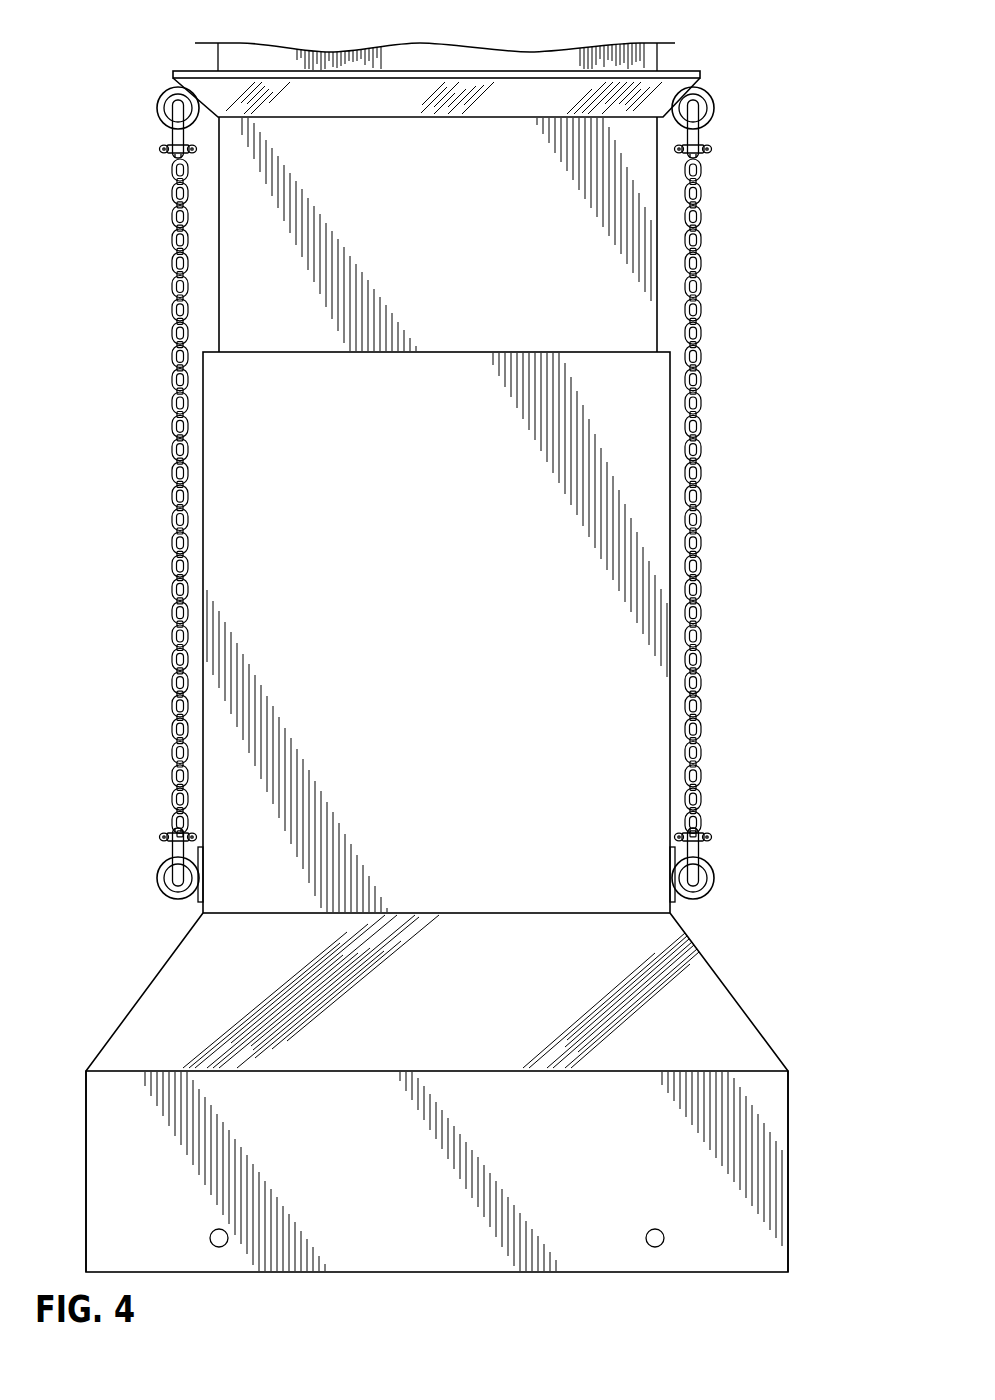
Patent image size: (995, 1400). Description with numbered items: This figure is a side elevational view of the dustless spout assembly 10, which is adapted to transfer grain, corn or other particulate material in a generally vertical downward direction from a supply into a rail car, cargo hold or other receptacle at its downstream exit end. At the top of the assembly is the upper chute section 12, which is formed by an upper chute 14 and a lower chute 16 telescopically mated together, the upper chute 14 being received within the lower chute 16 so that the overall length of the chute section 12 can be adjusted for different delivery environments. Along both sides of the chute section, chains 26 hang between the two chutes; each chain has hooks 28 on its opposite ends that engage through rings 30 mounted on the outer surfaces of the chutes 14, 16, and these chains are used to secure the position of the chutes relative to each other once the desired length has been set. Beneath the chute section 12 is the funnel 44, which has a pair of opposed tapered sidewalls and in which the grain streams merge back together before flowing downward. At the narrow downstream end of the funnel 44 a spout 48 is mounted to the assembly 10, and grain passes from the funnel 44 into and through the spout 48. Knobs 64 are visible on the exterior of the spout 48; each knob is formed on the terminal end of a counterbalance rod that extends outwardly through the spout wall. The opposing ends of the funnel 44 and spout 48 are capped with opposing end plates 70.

The dustless spout assembly 10 is at (152, 74).
The upper chute section 12 is at (158, 371).
The upper chute 14 is at (232, 233).
The lower chute 16 is at (222, 528).
The chains 26 is at (174, 451).
The hooks 28 is at (176, 138).
The rings 30 is at (157, 108).
The funnel 44 is at (733, 996).
The spout 48 is at (790, 1114).
The knob 64 is at (220, 1248).
The end plates 70 is at (86, 1185).